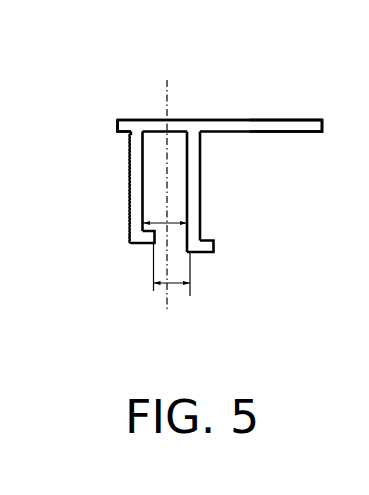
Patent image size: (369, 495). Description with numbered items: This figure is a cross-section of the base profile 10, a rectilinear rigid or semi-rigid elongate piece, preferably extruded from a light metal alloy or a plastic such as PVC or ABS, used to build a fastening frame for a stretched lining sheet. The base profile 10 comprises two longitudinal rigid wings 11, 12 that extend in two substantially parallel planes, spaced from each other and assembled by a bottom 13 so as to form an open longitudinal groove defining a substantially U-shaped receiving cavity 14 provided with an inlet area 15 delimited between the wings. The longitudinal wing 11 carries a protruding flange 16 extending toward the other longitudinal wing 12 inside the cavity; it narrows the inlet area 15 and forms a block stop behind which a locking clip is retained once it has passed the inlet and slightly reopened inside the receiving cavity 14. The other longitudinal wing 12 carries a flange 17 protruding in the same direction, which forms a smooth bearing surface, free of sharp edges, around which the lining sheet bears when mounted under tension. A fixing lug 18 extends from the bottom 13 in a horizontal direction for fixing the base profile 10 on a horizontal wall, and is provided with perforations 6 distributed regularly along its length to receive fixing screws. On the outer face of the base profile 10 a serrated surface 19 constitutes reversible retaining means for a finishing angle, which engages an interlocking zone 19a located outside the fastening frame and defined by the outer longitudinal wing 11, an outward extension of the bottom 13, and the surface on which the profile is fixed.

The base profile 10 is at (117, 95).
The perforations 6 is at (245, 130).
The bottom 13 is at (143, 127).
The fixing lug 18 is at (295, 128).
The interlocking zone 19a is at (126, 134).
The longitudinal wing 11 is at (140, 191).
The serrated surface 19 is at (131, 210).
The flange 16 is at (144, 246).
The longitudinal wing 12 is at (193, 162).
The flange 17 is at (203, 253).
The receiving cavity 14 is at (180, 187).
The inlet area 15 is at (176, 244).